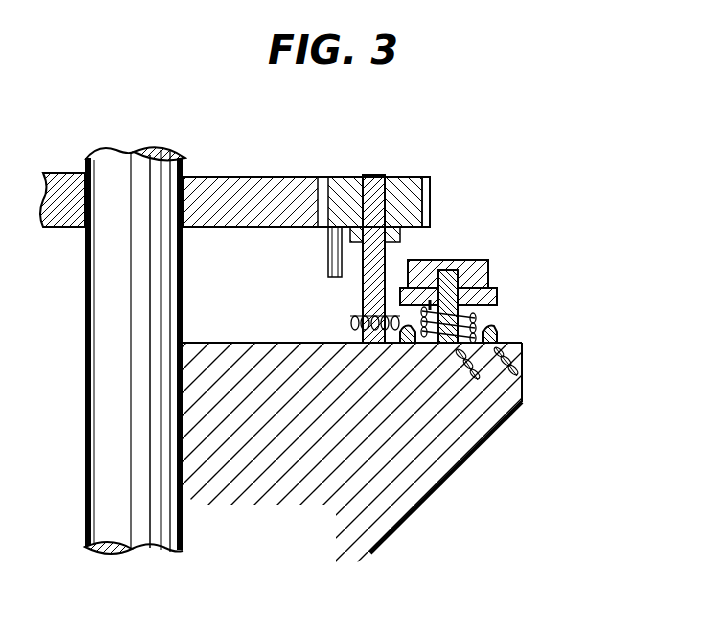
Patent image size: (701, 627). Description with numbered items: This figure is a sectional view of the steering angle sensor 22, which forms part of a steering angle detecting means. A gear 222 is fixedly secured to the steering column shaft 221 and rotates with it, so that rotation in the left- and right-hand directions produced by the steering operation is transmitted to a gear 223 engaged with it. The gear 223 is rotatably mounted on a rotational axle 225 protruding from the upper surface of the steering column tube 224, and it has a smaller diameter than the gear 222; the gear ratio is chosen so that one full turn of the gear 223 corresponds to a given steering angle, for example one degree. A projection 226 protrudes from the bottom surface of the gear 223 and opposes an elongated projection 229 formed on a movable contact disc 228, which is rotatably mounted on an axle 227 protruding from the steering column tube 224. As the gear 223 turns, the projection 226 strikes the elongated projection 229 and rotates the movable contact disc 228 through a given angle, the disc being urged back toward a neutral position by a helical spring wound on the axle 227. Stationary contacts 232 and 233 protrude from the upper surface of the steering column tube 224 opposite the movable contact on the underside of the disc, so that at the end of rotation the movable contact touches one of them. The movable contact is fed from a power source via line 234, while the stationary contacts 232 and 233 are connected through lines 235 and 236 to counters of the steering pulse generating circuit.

The steering angle sensor 22 is at (456, 204).
The steering column shaft 221 is at (121, 165).
The gear 222 is at (256, 195).
The gear 223 is at (347, 197).
The steering column tube 224 is at (387, 503).
The rotational axle 225 is at (381, 177).
The projection 226 is at (327, 250).
The axle 227 is at (472, 308).
The movable contact disc 228 is at (500, 290).
The elongated projection 229 is at (483, 258).
The stationary contact 232 is at (402, 345).
The stationary contact 233 is at (497, 330).
The line 234 is at (470, 382).
The line 235 is at (350, 315).
The line 236 is at (522, 386).